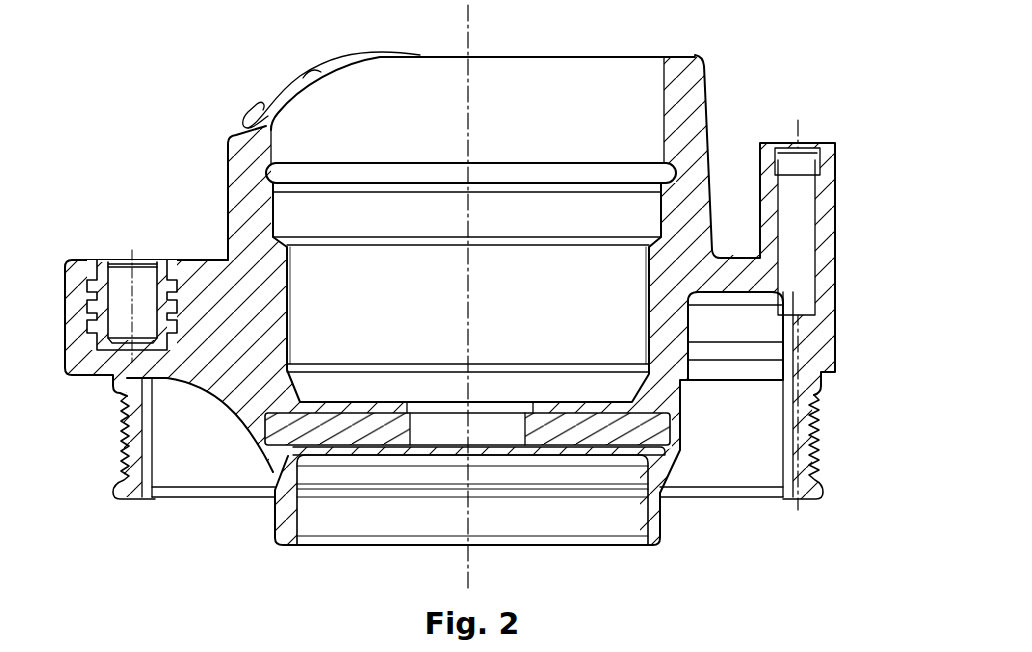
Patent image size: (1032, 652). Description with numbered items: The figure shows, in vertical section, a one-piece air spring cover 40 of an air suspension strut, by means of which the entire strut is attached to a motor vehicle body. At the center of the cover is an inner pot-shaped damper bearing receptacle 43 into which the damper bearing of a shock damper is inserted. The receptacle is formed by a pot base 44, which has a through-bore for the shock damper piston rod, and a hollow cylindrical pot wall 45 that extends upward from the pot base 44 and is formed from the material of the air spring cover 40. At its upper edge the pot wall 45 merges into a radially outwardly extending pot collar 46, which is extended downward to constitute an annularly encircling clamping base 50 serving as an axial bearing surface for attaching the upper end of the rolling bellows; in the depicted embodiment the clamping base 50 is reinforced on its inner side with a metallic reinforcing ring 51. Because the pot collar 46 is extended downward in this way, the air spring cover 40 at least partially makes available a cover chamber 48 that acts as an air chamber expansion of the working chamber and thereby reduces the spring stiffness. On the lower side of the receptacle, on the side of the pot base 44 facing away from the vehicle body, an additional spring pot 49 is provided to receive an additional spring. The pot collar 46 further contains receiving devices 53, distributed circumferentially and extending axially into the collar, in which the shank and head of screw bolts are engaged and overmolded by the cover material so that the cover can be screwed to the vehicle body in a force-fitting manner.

The air spring cover 40 is at (434, 297).
The damper bearing receptacle 43 is at (297, 287).
The pot base 44 is at (594, 410).
The pot wall 45 is at (274, 323).
The pot collar 46 is at (207, 270).
The cover chamber 48 is at (721, 338).
The additional spring pot 49 is at (653, 528).
The clamping base 50 is at (120, 440).
The reinforcing ring 51 is at (785, 457).
The receiving devices 53 is at (122, 275).